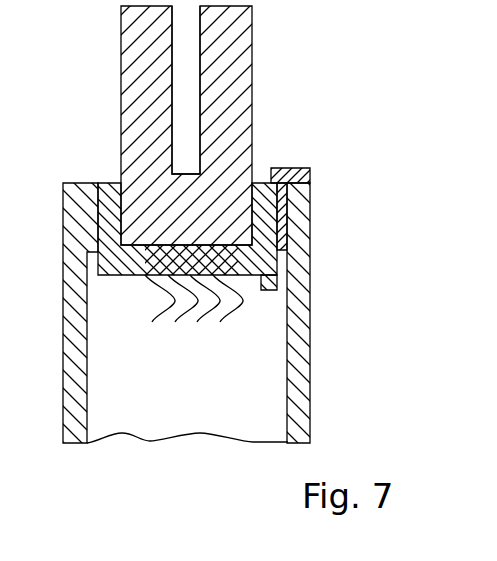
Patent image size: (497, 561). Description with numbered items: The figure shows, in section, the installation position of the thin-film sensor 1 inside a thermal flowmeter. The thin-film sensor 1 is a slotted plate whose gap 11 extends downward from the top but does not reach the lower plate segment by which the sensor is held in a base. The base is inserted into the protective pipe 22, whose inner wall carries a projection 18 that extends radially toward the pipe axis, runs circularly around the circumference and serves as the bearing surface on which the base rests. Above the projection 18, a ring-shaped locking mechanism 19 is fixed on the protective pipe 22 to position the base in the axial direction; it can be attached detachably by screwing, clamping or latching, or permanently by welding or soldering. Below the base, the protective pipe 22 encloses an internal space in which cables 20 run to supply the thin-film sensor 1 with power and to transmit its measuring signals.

The thin-film sensor 1 is at (113, 34).
The gap 11 is at (192, 55).
The projection 18 is at (280, 288).
The ring-shaped locking mechanism 19 is at (311, 177).
The cables 20 is at (235, 308).
The protective pipe 22 is at (306, 333).